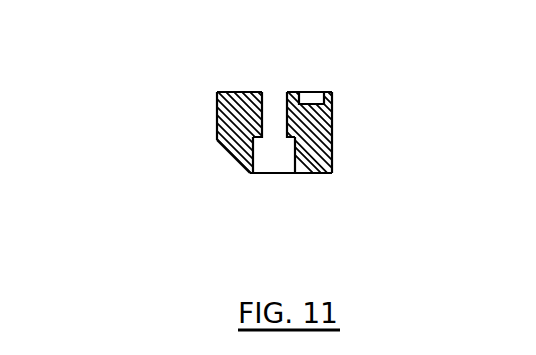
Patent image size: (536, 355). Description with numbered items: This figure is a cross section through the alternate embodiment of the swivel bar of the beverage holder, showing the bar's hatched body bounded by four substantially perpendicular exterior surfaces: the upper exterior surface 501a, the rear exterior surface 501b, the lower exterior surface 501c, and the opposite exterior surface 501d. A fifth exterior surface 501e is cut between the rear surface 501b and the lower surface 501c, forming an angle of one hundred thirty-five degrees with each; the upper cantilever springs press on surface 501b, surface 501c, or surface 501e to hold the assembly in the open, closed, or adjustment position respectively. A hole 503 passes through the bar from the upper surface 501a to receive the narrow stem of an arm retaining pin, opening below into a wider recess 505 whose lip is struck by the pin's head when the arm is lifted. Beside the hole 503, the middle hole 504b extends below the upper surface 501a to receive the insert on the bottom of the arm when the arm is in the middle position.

The upper exterior surface 501a is at (233, 92).
The rear exterior surface 501b is at (217, 123).
The lower exterior surface 501c is at (315, 174).
The exterior surface 501d is at (332, 135).
The fifth exterior surface 501e is at (237, 155).
The hole 503 is at (273, 112).
The middle hole 504b is at (307, 100).
The recess 505 is at (280, 162).